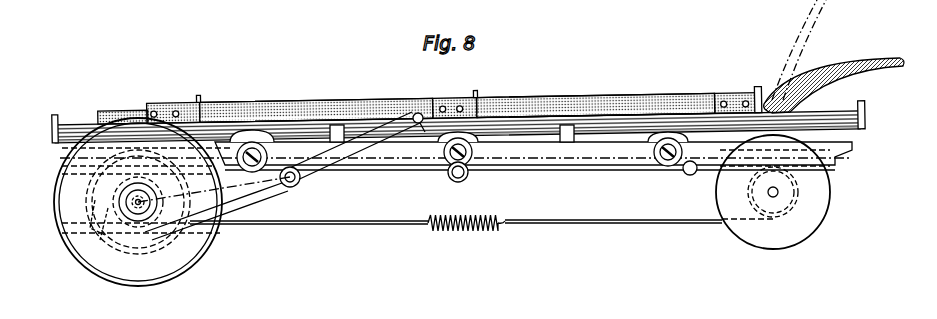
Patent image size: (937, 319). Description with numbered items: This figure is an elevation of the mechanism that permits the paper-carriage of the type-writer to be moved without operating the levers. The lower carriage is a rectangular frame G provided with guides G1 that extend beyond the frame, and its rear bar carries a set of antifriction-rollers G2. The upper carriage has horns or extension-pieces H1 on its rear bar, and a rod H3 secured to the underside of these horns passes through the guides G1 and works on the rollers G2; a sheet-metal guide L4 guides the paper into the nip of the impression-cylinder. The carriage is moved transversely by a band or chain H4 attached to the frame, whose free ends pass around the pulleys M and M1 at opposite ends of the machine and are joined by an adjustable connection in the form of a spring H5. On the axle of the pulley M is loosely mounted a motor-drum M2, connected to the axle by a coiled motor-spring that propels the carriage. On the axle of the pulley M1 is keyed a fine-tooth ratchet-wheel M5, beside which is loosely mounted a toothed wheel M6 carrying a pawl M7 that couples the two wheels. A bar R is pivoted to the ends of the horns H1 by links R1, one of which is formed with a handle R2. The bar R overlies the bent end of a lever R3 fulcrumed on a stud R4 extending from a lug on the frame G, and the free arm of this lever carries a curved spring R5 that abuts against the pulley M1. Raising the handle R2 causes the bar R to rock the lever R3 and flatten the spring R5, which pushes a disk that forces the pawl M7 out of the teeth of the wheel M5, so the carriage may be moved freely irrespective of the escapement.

The rod H3 is at (104, 118).
The links R1 is at (176, 100).
The horns or extension-pieces H1 is at (201, 93).
The sheet-metal guide L4 is at (254, 98).
The bar R is at (313, 99).
The handle R2 is at (828, 80).
The pawl M7 is at (78, 176).
The pulley M1 is at (156, 214).
The fine-tooth ratchet-wheel M5 is at (96, 212).
The curved spring R5 is at (142, 212).
The toothed wheel M6 is at (202, 246).
The antifriction-rollers G2 is at (252, 172).
The stud R4 is at (300, 182).
The lever R3 is at (360, 152).
The guides G1 is at (452, 134).
The rectangular frame G is at (575, 166).
The band or chain H4 is at (352, 225).
The spring H5 is at (456, 232).
The pulley M is at (748, 192).
The motor-drum M2 is at (782, 228).